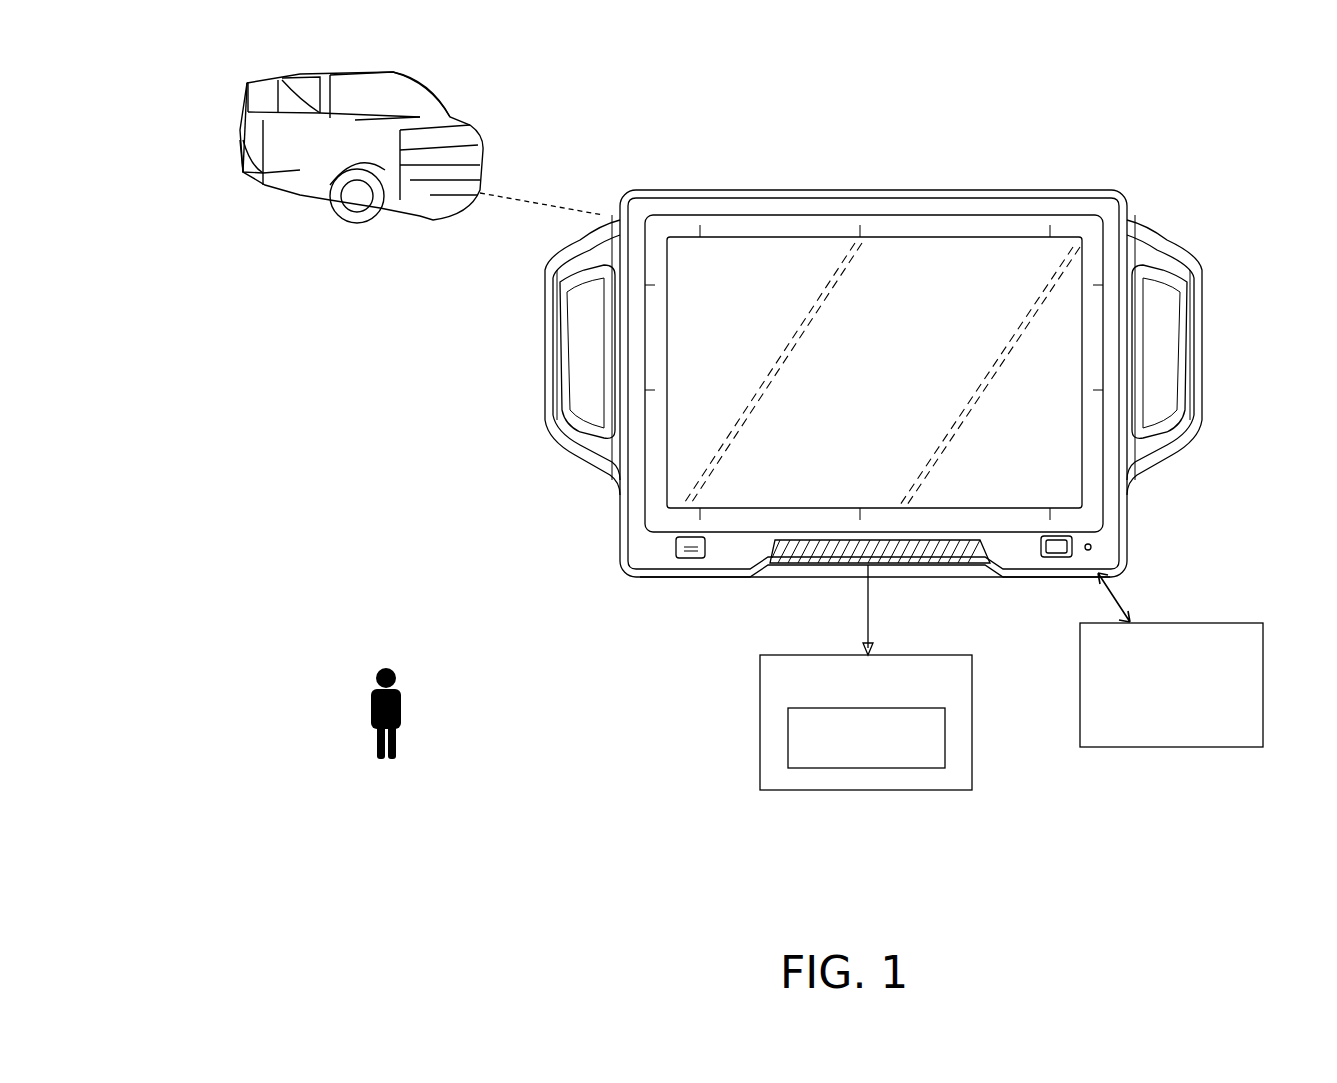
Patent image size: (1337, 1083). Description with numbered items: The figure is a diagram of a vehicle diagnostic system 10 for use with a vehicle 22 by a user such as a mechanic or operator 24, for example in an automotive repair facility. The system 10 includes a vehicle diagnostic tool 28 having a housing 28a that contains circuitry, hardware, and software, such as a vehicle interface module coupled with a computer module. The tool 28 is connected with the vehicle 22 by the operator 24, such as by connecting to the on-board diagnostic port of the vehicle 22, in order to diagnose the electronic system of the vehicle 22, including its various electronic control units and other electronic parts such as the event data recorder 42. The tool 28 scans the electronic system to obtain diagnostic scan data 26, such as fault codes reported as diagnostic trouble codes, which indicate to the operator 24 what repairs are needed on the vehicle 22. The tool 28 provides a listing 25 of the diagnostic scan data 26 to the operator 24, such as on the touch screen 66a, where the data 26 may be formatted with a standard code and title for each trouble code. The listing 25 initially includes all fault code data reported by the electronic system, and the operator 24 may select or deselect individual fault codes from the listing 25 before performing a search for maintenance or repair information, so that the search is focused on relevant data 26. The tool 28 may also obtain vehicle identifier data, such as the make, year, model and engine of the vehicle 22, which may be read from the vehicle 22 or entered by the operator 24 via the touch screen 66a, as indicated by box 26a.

The vehicle diagnostic system 10 is at (396, 458).
The vehicle 22 is at (450, 113).
The event data recorder 42 is at (536, 202).
The housing 28a is at (756, 192).
The vehicle diagnostic tool 28 is at (953, 228).
The touch screen 66a is at (988, 297).
The operator 24 is at (400, 698).
The listing 25 is at (760, 705).
The diagnostic scan data 26 is at (788, 748).
The vehicle identification (make, year, model, engine) 26a is at (1080, 692).